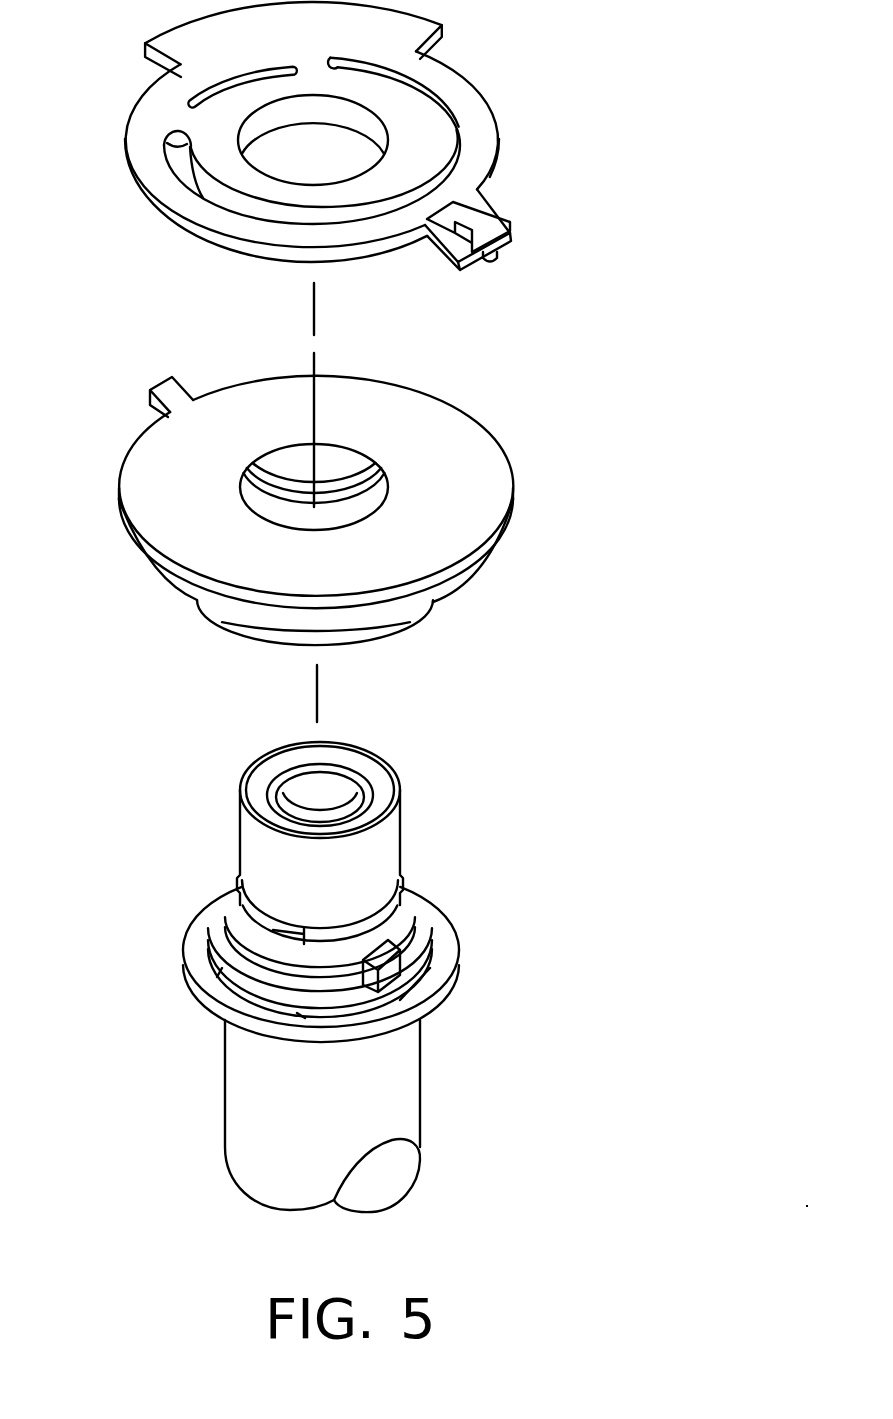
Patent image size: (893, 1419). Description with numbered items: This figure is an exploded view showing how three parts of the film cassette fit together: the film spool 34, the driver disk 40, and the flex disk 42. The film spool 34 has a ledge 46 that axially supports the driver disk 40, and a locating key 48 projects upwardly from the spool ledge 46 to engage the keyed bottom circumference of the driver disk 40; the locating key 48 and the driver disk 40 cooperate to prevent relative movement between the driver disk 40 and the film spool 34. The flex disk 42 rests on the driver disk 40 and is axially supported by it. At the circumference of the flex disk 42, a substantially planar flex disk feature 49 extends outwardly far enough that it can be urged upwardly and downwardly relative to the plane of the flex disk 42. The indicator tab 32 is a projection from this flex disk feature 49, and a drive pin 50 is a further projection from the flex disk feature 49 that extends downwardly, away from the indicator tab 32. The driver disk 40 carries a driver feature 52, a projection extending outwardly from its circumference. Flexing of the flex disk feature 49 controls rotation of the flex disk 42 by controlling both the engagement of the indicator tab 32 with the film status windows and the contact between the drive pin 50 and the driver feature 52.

The indicator tab 32 is at (488, 212).
The film spool 34 is at (412, 1081).
The driver disk 40 is at (123, 505).
The flex disk 42 is at (132, 112).
The ledge 46 is at (225, 952).
The locating key 48 is at (403, 950).
The flex disk feature 49 is at (441, 250).
The drive pin 50 is at (489, 258).
The driver feature 52 is at (165, 388).